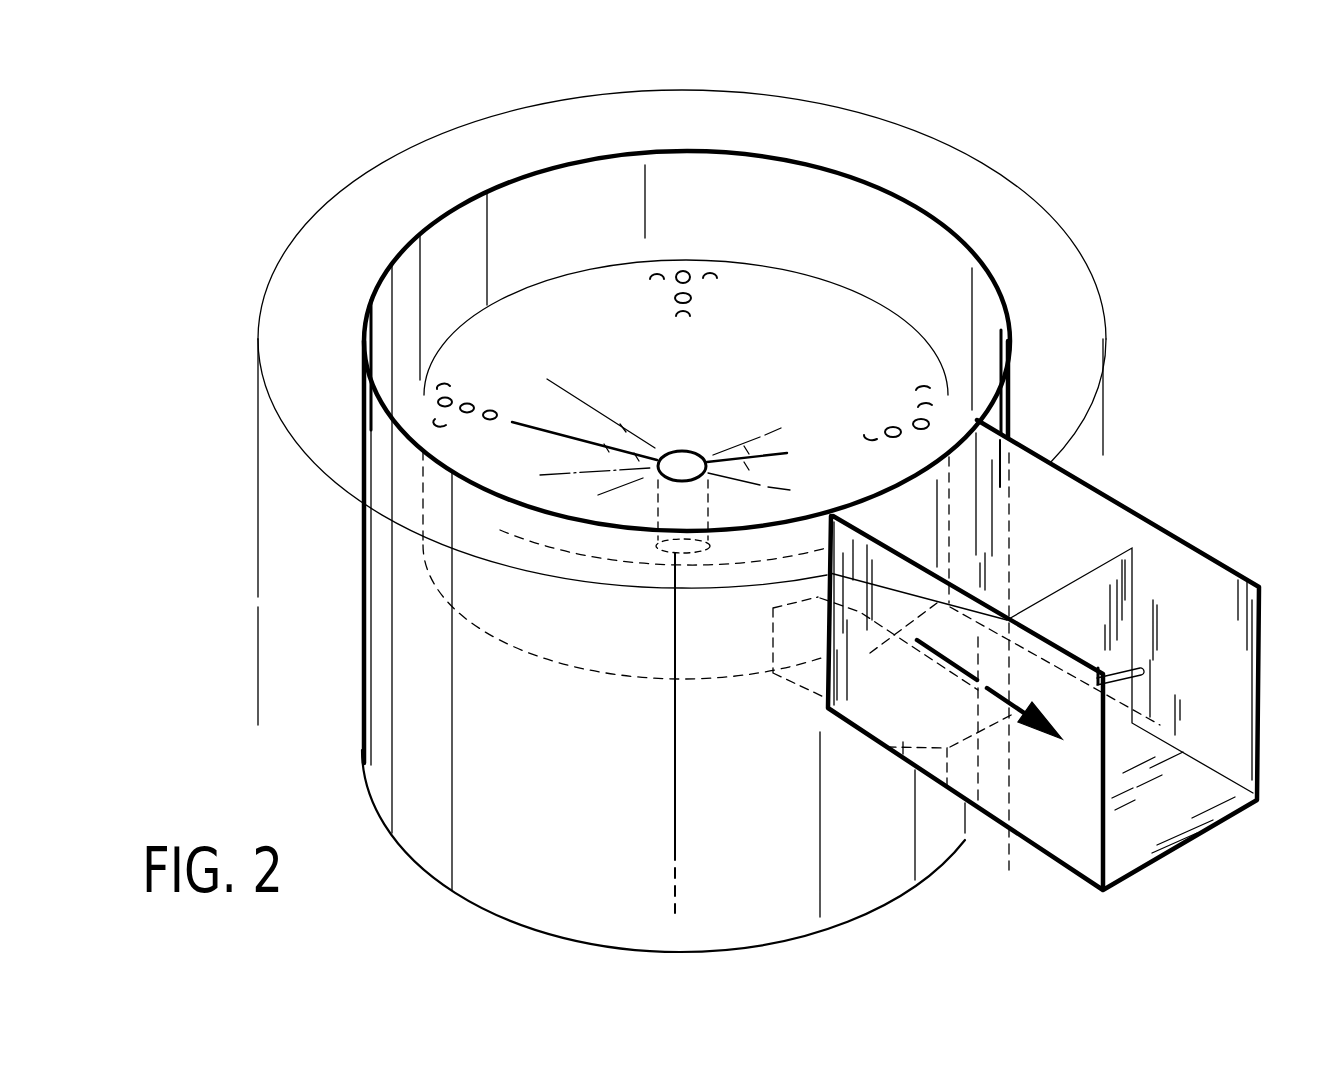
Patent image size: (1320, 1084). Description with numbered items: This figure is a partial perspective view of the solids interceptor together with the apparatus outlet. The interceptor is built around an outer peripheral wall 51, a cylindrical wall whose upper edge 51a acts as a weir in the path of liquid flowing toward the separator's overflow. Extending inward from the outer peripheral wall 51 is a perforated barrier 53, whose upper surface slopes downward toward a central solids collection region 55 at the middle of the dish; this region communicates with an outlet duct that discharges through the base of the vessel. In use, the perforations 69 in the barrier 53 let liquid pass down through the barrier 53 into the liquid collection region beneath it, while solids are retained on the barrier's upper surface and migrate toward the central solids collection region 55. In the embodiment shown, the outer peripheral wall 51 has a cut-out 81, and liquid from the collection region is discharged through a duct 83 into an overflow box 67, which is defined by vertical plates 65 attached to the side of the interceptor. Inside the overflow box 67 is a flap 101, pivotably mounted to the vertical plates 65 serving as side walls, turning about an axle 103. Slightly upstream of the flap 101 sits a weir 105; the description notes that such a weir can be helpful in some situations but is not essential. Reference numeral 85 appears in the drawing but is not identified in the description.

The outer peripheral wall 51 is at (625, 635).
The upper edge 51a is at (425, 395).
The perforated barrier 53 is at (497, 350).
The central solids collection region 55 is at (683, 466).
The vertical plates 65 is at (857, 713).
The overflow box 67 is at (1043, 532).
The perforations 69 is at (687, 272).
The cut-out 81 is at (707, 683).
The duct 83 is at (780, 705).
The pin 85 is at (1153, 650).
The flap 101 is at (1133, 573).
The axle 103 is at (1003, 680).
The weir 105 is at (903, 783).